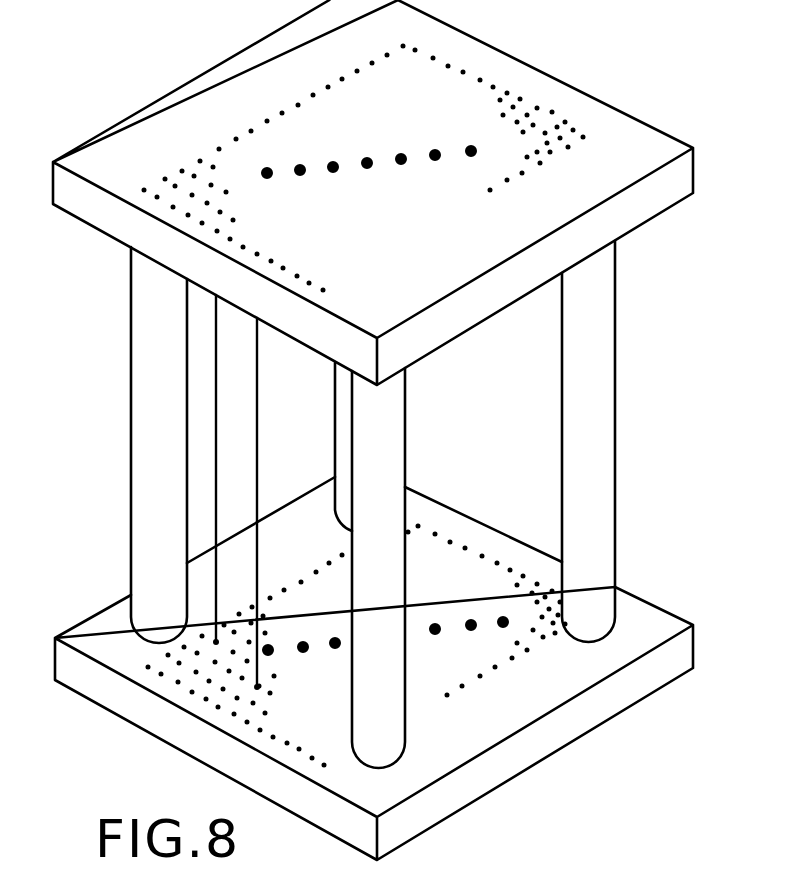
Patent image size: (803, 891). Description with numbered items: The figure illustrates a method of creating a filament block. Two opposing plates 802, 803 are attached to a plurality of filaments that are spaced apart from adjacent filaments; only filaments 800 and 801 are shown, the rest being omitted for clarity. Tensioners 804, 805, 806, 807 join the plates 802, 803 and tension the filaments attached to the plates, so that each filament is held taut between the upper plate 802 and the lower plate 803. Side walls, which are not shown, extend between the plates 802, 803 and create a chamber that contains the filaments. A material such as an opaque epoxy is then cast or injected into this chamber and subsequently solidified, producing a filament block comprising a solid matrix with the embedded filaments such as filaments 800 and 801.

The filament 800 is at (257, 462).
The filament 801 is at (213, 440).
The plate 802 is at (622, 148).
The plate 803 is at (638, 617).
The tensioner 804 is at (600, 340).
The tensioner 805 is at (385, 463).
The tensioner 806 is at (345, 400).
The tensioner 807 is at (163, 370).